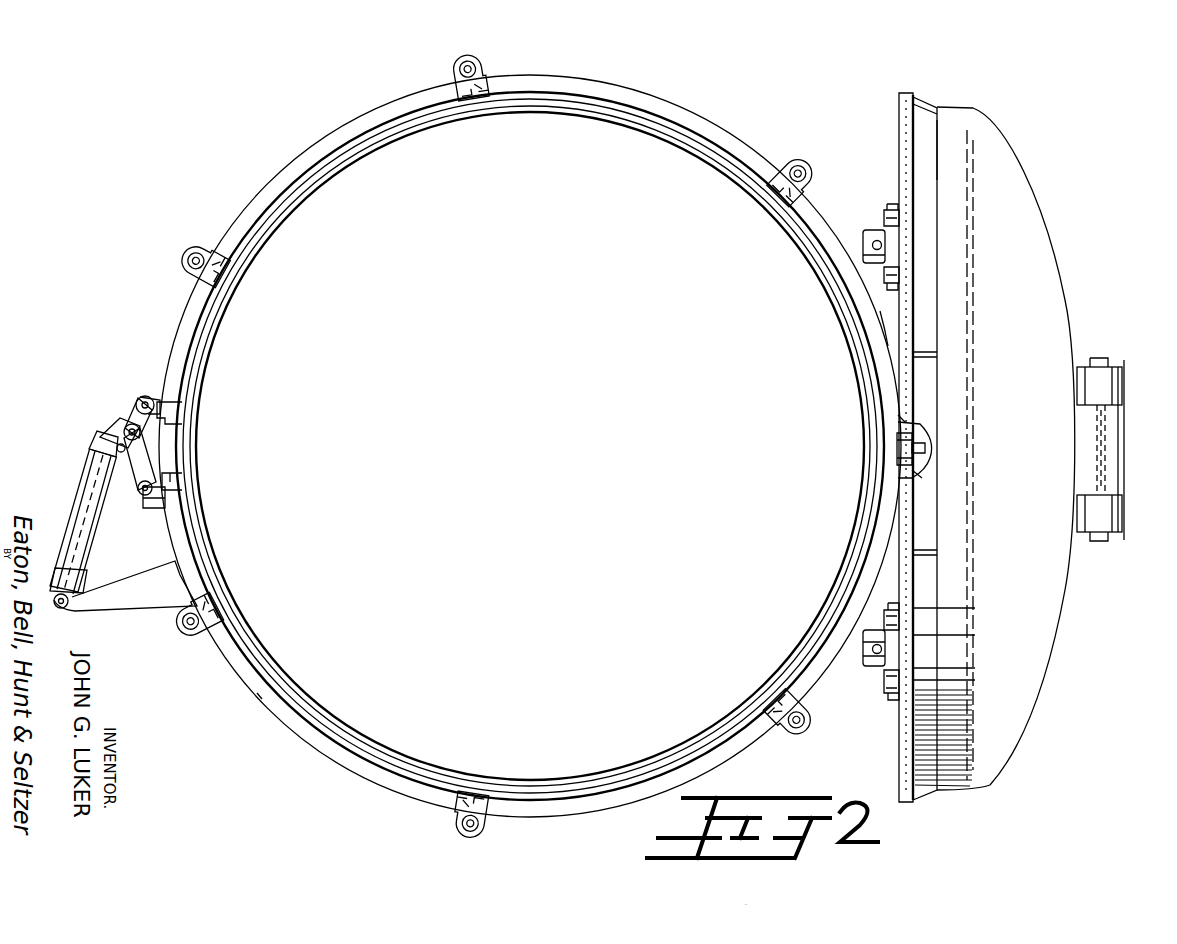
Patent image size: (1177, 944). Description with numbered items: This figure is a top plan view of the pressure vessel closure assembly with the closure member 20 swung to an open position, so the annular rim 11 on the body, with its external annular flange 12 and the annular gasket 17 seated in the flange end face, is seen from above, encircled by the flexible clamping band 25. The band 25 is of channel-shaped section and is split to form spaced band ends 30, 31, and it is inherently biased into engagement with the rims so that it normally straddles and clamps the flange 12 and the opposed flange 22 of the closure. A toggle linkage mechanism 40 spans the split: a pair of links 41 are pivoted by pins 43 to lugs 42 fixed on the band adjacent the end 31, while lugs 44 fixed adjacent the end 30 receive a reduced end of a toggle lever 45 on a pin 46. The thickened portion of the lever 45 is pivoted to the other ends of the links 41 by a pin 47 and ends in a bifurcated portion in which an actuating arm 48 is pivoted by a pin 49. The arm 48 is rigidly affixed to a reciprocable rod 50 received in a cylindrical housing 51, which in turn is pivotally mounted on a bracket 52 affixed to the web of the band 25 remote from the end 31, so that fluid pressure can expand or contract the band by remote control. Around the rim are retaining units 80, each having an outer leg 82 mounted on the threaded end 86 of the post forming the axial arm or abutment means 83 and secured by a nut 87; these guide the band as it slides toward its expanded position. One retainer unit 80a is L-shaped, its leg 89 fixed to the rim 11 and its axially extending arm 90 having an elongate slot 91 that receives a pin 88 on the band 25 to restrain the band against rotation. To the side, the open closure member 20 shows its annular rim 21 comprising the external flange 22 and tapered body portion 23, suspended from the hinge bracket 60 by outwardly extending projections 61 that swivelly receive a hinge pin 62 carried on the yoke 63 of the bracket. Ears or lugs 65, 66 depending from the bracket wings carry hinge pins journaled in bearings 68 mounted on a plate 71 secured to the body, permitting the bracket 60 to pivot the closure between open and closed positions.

The annular rim 11 is at (283, 731).
The external annular flange 12 is at (337, 745).
The annular gasket 17 is at (289, 688).
The closure member 20 is at (1045, 228).
The annular rim 21 is at (940, 135).
The external annular flange 22 is at (899, 90).
The tapered body portion 23 is at (926, 100).
The flexible clamping band 25 is at (255, 696).
The band end 30 is at (172, 412).
The band end 31 is at (174, 483).
The toggle linkage mechanism 40 is at (183, 476).
The link 41 is at (150, 458).
The lug 42 is at (155, 508).
The pin 43 is at (147, 496).
The lug 44 is at (137, 380).
The toggle lever 45 is at (125, 420).
The pin 46 is at (142, 403).
The pin 47 is at (142, 433).
The actuating arm 48 is at (103, 437).
The pin 49 is at (122, 453).
The rod 50 is at (92, 542).
The cylindrical housing 51 is at (78, 521).
The bracket 52 is at (120, 610).
The hinge bracket 60 is at (1095, 464).
The projection 61 is at (1082, 512).
The hinge pin 62 is at (1097, 445).
The yoke 63 is at (1125, 448).
The ear or lug 65 is at (900, 680).
The ear or lug 66 is at (900, 275).
The bearing 68 is at (866, 645).
The plate 71 is at (885, 330).
The retaining unit 80 is at (504, 444).
The retainer unit 80a is at (921, 472).
The leg 82 is at (455, 813).
The axial arm or abutment means 83 is at (480, 780).
The threaded end 86 is at (480, 826).
The nut 87 is at (478, 838).
The pin 88 is at (925, 460).
The leg 89 is at (897, 447).
The axially extending arm 90 is at (905, 420).
The elongate slot 91 is at (920, 430).